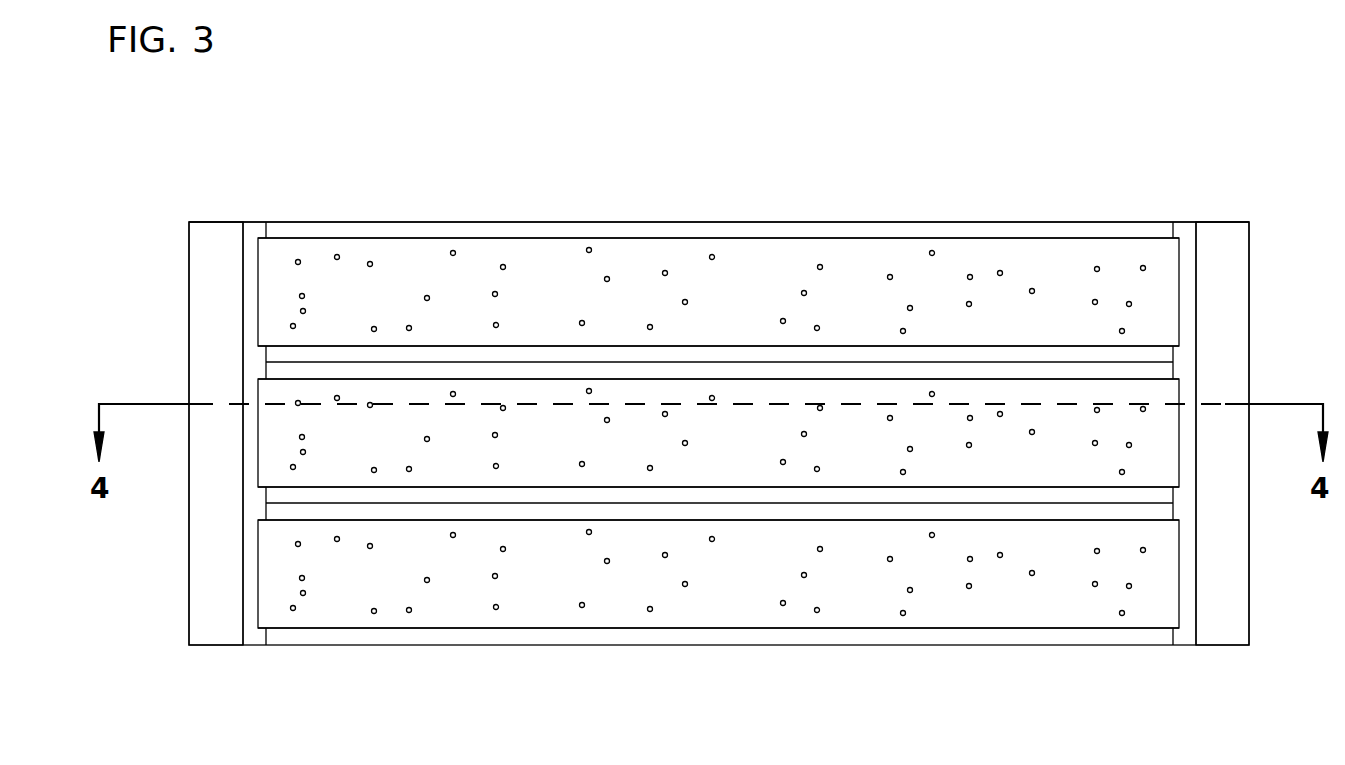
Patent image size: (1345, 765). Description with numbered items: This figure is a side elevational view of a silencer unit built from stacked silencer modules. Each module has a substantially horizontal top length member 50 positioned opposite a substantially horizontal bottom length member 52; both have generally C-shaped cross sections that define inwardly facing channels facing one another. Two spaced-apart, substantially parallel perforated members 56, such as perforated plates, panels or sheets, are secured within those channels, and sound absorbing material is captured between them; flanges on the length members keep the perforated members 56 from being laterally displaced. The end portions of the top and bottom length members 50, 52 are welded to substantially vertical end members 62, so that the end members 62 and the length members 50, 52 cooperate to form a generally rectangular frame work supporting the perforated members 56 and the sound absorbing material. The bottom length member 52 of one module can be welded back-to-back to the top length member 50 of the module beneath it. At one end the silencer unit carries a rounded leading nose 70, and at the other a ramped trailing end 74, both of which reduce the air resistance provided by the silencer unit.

The top length member 50 is at (583, 222).
The bottom length member 52 is at (682, 345).
The perforated member 56 is at (556, 317).
The end member 62 is at (253, 222).
The rounded leading nose 70 is at (1235, 629).
The ramped trailing end 74 is at (200, 623).